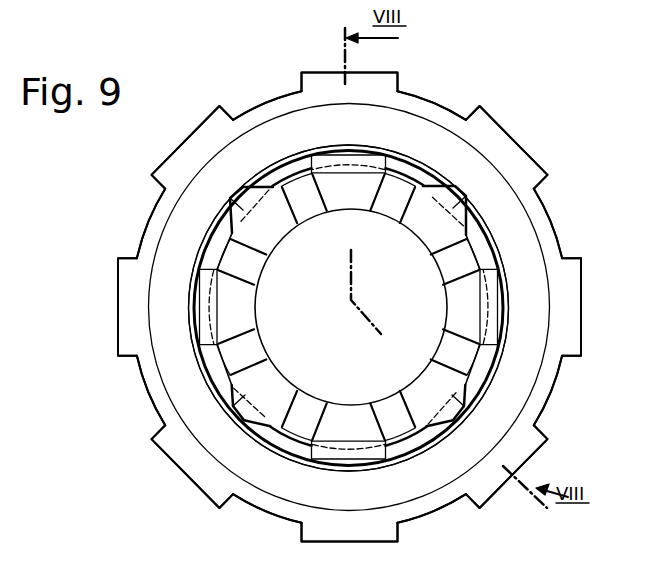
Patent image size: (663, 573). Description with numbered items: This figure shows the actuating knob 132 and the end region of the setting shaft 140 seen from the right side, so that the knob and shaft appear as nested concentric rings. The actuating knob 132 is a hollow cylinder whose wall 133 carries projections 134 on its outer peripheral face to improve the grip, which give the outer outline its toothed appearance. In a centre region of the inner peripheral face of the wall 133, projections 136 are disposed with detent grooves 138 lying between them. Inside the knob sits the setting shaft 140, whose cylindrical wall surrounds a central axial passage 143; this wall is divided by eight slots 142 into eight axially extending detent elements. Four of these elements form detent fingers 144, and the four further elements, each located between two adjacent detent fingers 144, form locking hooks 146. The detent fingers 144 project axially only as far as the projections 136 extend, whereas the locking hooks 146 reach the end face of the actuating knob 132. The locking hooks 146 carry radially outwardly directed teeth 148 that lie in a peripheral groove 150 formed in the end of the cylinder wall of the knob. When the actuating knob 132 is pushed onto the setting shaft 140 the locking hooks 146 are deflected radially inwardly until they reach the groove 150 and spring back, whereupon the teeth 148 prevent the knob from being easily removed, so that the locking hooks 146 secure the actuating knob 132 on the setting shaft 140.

The actuating knob 132 is at (503, 108).
The wall 133 is at (162, 372).
The projections 134 is at (215, 120).
The projections 136 is at (406, 157).
The detent grooves 138 is at (520, 170).
The setting shaft 140 is at (203, 234).
The slots 142 is at (240, 240).
The axial passage 143 is at (264, 336).
The detent fingers 144 is at (275, 234).
The locking hooks 146 is at (235, 297).
The teeth 148 is at (348, 164).
The groove 150 is at (288, 166).